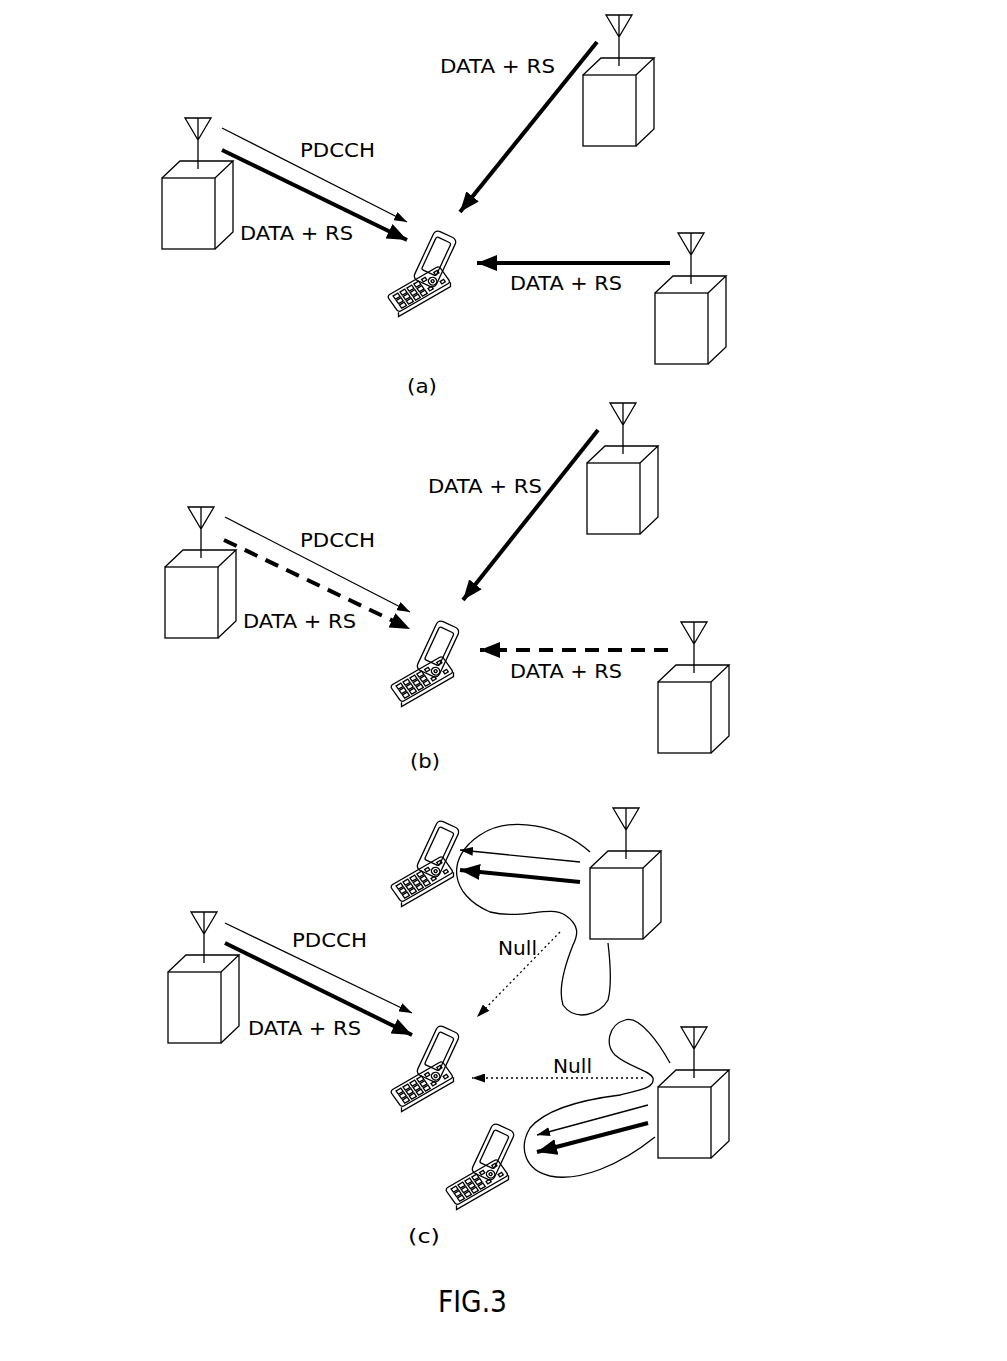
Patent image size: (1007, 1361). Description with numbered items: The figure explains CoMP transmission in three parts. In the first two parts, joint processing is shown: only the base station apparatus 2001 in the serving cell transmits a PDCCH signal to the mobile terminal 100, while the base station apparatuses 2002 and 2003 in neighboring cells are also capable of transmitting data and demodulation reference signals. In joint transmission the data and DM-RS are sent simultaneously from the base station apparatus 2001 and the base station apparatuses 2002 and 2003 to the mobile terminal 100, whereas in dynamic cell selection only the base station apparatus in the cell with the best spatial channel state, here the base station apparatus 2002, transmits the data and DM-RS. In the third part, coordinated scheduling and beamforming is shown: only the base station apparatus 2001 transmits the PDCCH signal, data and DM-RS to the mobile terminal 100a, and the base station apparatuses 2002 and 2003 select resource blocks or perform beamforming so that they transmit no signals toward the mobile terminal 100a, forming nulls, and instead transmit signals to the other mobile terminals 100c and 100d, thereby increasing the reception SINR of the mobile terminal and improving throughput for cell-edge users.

The base station apparatus in serving cell 2001 is at (174, 580).
The base station apparatus in neighboring cell 2002 is at (664, 477).
The base station apparatus in neighboring cell 2003 is at (735, 695).
The mobile terminal 100 is at (429, 481).
The mobile terminal 100a is at (435, 1079).
The other mobile terminal 100c is at (433, 877).
The other mobile terminal 100d is at (496, 1175).